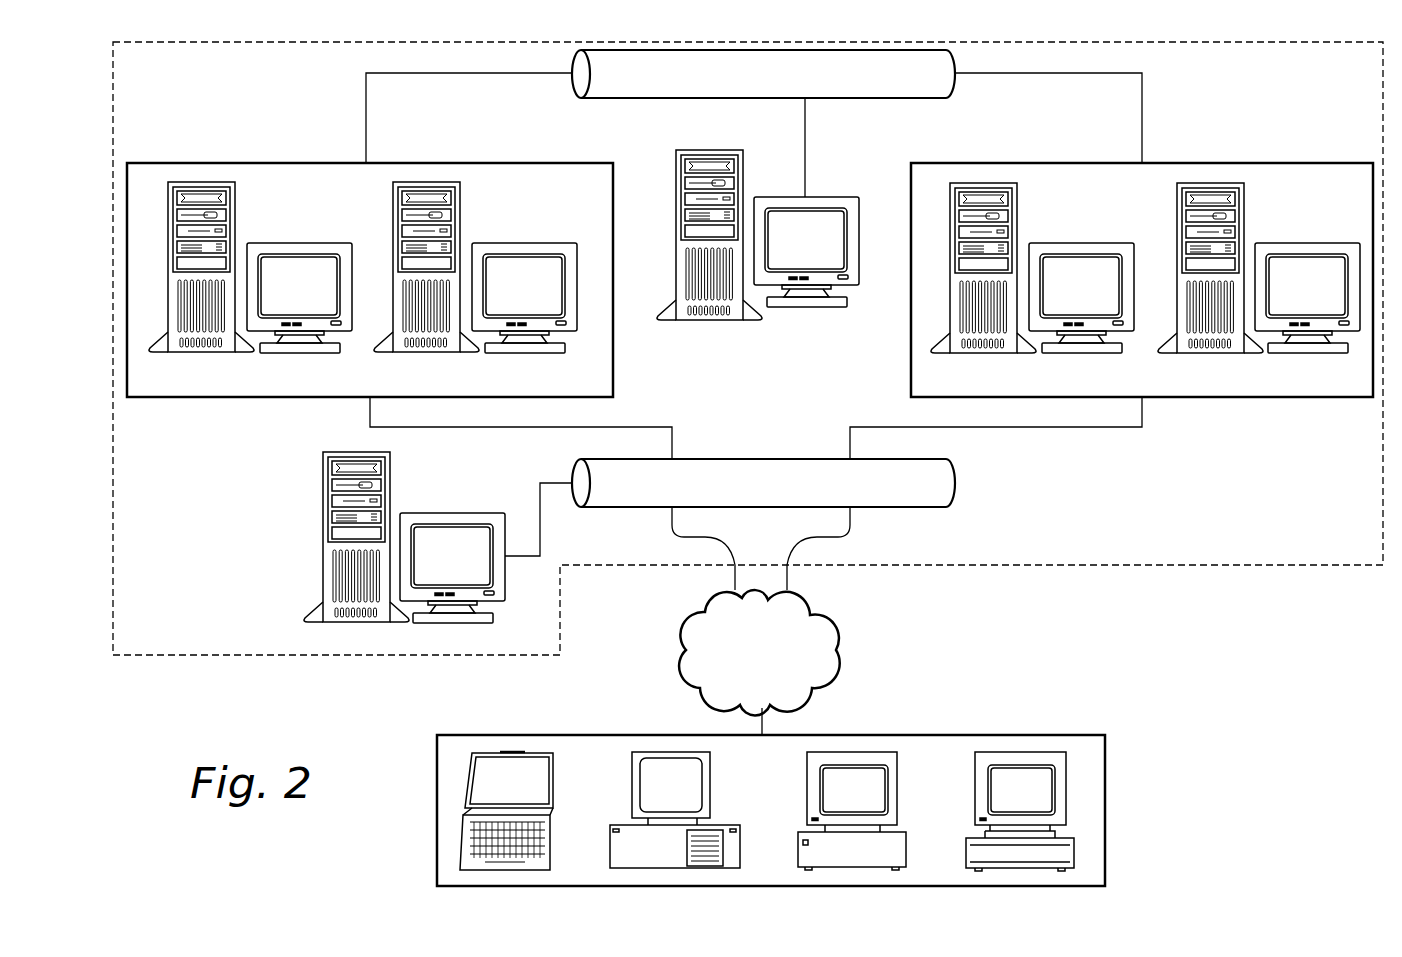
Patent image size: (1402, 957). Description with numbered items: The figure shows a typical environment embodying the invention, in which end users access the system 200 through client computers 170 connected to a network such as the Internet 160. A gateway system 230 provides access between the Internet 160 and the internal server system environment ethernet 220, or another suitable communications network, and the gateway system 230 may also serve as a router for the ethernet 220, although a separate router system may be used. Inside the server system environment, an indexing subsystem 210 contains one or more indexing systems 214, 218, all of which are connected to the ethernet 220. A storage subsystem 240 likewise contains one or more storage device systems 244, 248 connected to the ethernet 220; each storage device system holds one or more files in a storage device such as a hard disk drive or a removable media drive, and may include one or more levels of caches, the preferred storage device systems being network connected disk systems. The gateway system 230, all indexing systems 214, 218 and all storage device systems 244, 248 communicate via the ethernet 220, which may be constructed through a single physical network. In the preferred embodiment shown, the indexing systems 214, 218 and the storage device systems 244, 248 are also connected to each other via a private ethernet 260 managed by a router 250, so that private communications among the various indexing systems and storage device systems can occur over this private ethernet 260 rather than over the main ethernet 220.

The Internet 160 is at (838, 652).
The client computers 170 is at (1105, 815).
The system 200 is at (1270, 566).
The indexing subsystem 210 is at (370, 251).
The indexing system 214 is at (299, 243).
The indexing system 218 is at (523, 243).
The ethernet 220 is at (909, 507).
The gateway system 230 is at (450, 513).
The storage subsystem 240 is at (1142, 251).
The storage device system 244 is at (1083, 243).
The storage device system 248 is at (1314, 243).
The router 250 is at (845, 197).
The private ethernet 260 is at (603, 98).